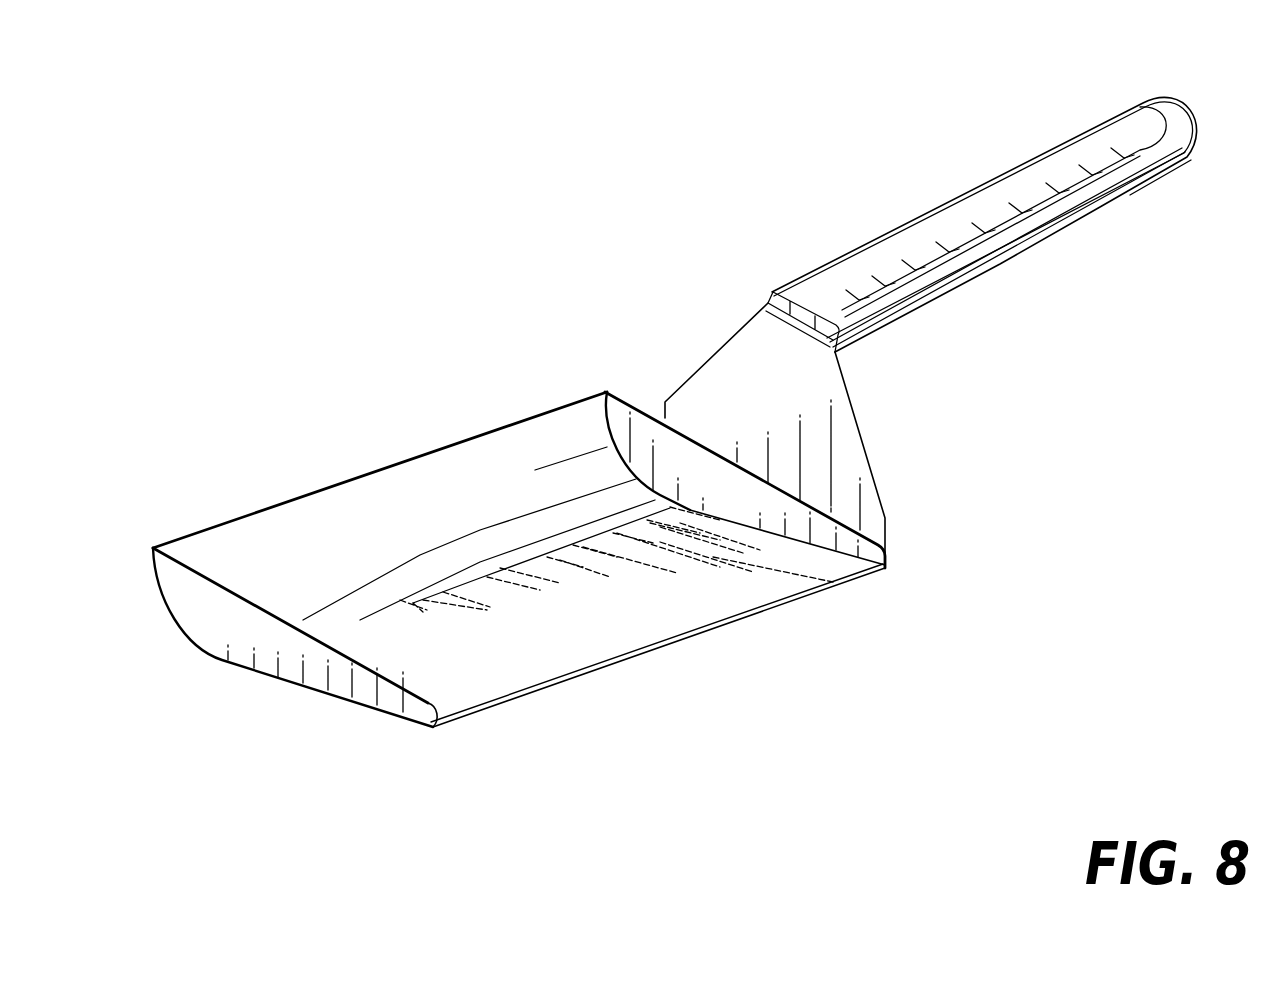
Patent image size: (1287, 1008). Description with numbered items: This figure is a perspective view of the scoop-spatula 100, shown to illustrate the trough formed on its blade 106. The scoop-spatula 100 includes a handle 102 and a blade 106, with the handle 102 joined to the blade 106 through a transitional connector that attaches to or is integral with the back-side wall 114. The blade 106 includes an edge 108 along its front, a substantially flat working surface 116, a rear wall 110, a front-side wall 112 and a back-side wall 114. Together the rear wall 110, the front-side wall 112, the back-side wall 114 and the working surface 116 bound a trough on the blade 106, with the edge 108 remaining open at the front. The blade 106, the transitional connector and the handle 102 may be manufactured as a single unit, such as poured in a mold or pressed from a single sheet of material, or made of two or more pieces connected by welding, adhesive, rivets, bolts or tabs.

The scoop-spatula 100 is at (774, 63).
The handle 102 is at (1072, 229).
The blade 106 is at (633, 629).
The edge 108 is at (680, 637).
The rear wall 110 is at (357, 477).
The front-side wall 112 is at (310, 662).
The back-side wall 114 is at (883, 548).
The working surface 116 is at (535, 608).